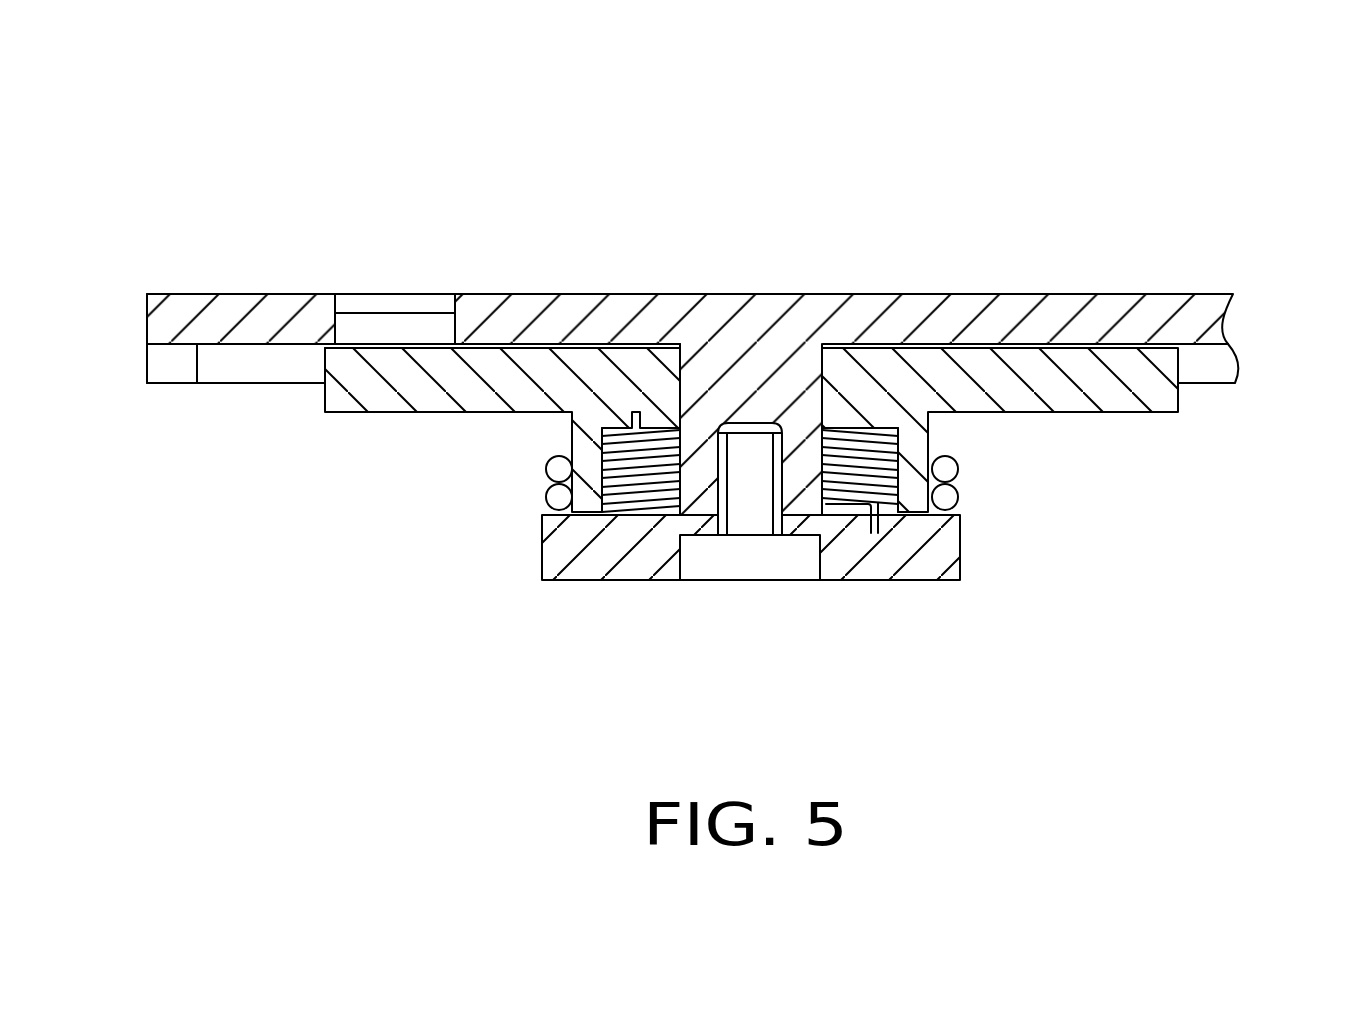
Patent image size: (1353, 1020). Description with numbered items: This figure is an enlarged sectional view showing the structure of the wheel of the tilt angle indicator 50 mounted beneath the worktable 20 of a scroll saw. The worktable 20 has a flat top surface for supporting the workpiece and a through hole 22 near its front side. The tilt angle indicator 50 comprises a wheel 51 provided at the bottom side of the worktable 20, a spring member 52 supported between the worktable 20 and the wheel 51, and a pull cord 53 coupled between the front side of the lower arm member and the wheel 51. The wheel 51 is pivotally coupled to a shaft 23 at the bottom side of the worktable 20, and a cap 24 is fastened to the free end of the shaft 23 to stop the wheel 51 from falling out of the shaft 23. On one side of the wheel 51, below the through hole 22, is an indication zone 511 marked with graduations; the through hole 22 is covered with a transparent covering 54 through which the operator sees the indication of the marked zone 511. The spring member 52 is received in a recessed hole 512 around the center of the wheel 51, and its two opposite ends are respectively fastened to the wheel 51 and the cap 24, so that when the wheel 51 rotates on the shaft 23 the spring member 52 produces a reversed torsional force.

The worktable 20 is at (692, 286).
The through hole 22 is at (453, 335).
The shaft 23 is at (702, 463).
The cap 24 is at (950, 562).
The tilt angle indicator 50 is at (733, 448).
The wheel 51 is at (1007, 363).
The indication zone 511 is at (300, 296).
The recessed hole 512 is at (616, 492).
The spring member 52 is at (880, 503).
The pull cord 53 is at (540, 505).
The transparent covering 54 is at (378, 305).